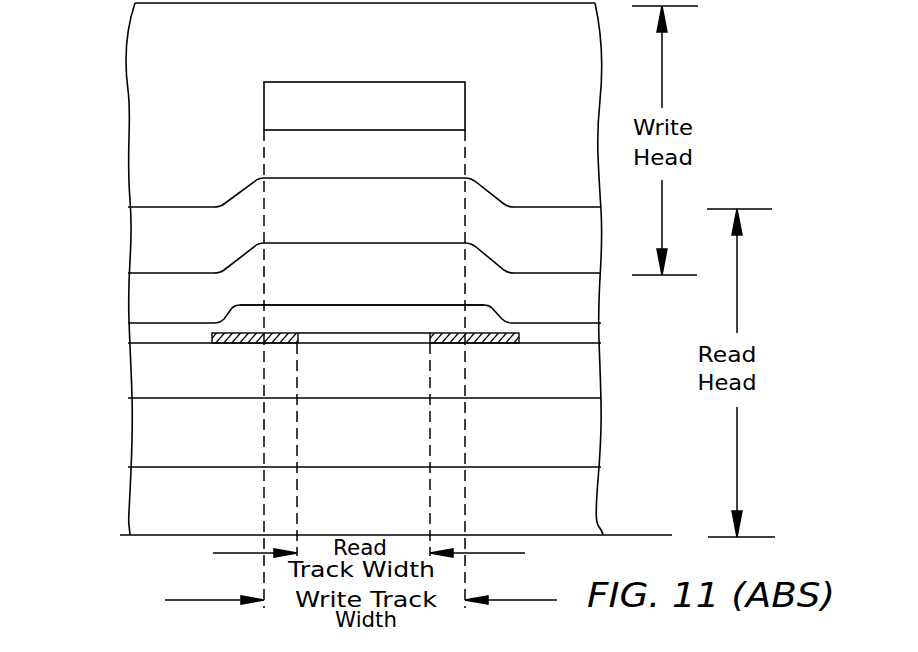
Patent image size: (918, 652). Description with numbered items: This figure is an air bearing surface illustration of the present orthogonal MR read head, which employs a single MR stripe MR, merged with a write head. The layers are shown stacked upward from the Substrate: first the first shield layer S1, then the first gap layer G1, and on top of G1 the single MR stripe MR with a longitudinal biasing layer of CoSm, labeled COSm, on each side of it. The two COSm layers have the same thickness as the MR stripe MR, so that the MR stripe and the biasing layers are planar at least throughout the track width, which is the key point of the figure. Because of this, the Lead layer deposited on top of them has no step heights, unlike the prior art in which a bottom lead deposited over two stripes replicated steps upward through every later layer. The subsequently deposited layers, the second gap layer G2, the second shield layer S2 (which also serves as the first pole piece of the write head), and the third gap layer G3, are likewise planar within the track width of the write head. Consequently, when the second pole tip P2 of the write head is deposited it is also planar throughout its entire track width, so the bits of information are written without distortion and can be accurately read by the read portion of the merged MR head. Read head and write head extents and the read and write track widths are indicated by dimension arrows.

The second pole tip P2 is at (364, 106).
The third gap layer G3 is at (364, 160).
The second shield layer S2 is at (364, 225).
The second gap layer G2 is at (364, 293).
The lead layer Lead is at (362, 315).
The CoSm longitudinal biasing layer COSm is at (366, 329).
The MR stripe MR is at (318, 341).
The first gap layer G1 is at (364, 363).
The first shield layer S1 is at (364, 421).
The substrate Substrate is at (364, 494).